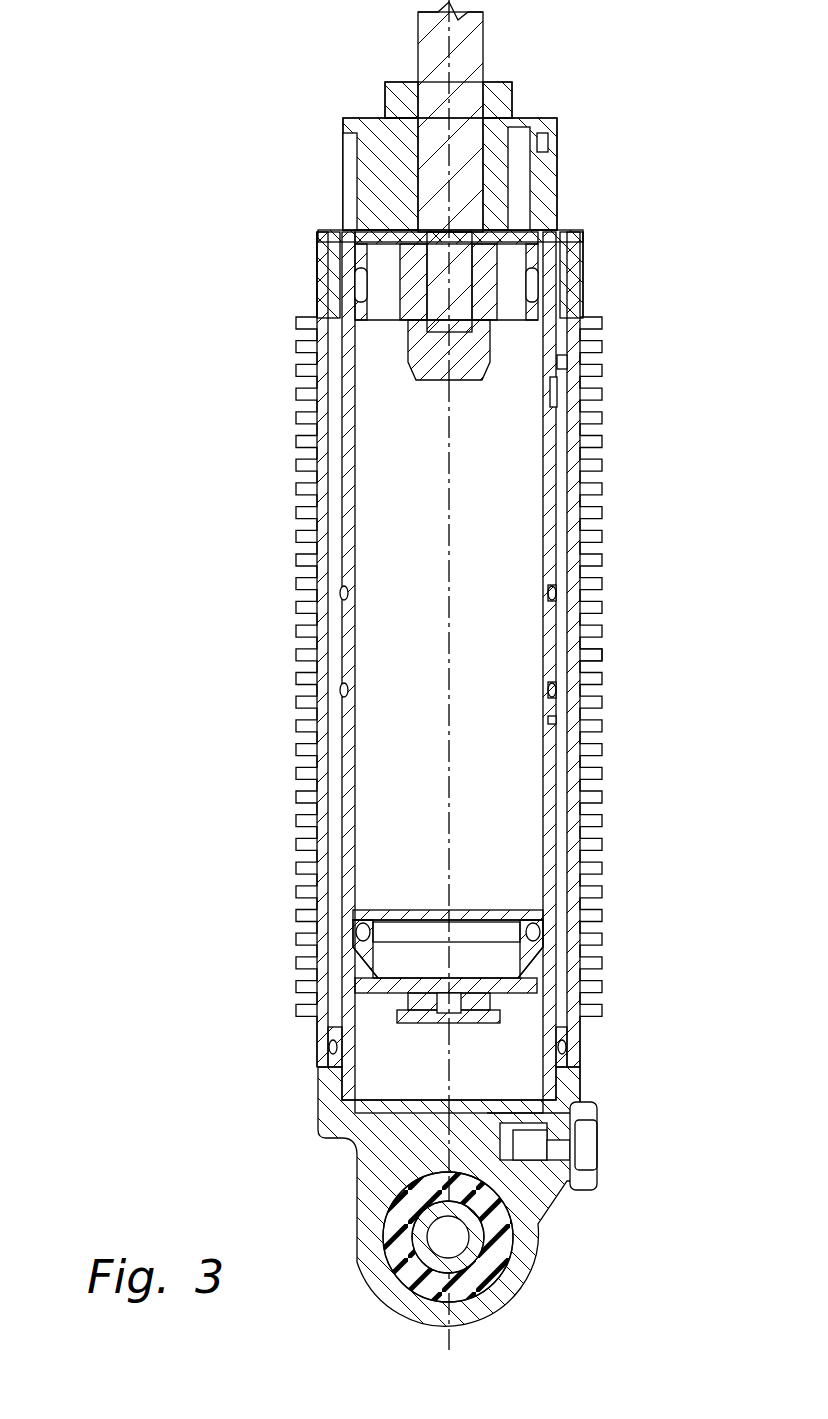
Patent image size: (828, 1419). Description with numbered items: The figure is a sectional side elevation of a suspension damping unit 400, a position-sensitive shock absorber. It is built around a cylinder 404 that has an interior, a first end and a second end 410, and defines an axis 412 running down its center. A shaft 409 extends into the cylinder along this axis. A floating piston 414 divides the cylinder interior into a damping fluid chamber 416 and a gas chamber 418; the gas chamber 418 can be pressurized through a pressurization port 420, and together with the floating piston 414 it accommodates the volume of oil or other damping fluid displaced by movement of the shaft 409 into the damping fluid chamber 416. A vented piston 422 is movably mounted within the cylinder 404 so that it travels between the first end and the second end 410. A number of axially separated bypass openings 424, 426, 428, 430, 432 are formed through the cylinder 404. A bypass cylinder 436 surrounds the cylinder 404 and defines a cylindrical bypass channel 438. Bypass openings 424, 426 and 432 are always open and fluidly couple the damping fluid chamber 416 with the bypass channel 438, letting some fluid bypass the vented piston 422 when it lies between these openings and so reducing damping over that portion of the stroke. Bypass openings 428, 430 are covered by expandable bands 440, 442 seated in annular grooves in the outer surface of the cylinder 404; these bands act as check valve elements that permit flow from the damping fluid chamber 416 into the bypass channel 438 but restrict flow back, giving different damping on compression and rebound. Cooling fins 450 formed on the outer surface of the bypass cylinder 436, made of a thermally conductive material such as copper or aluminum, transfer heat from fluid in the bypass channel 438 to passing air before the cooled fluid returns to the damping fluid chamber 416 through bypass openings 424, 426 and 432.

The suspension damping unit 400 is at (373, 675).
The cylinder 404 is at (545, 777).
The piston rod 409 is at (470, 42).
The second end 410 is at (557, 880).
The axis 412 is at (447, 862).
The floating piston 414 is at (520, 987).
The damping fluid chamber 416 is at (515, 832).
The gas chamber 418 is at (517, 1066).
The pressurization port 420 is at (597, 1157).
The vented piston 422 is at (383, 341).
The bypass opening 424 is at (557, 362).
The bypass opening 426 is at (540, 392).
The bypass opening 428 is at (548, 593).
The bypass opening 430 is at (548, 690).
The bypass opening 432 is at (548, 720).
The bypass cylinder 436 is at (580, 742).
The bypass channel 438 is at (565, 640).
The expandable band 440 is at (557, 593).
The expandable band 442 is at (557, 695).
The cooling fins 450 is at (297, 821).